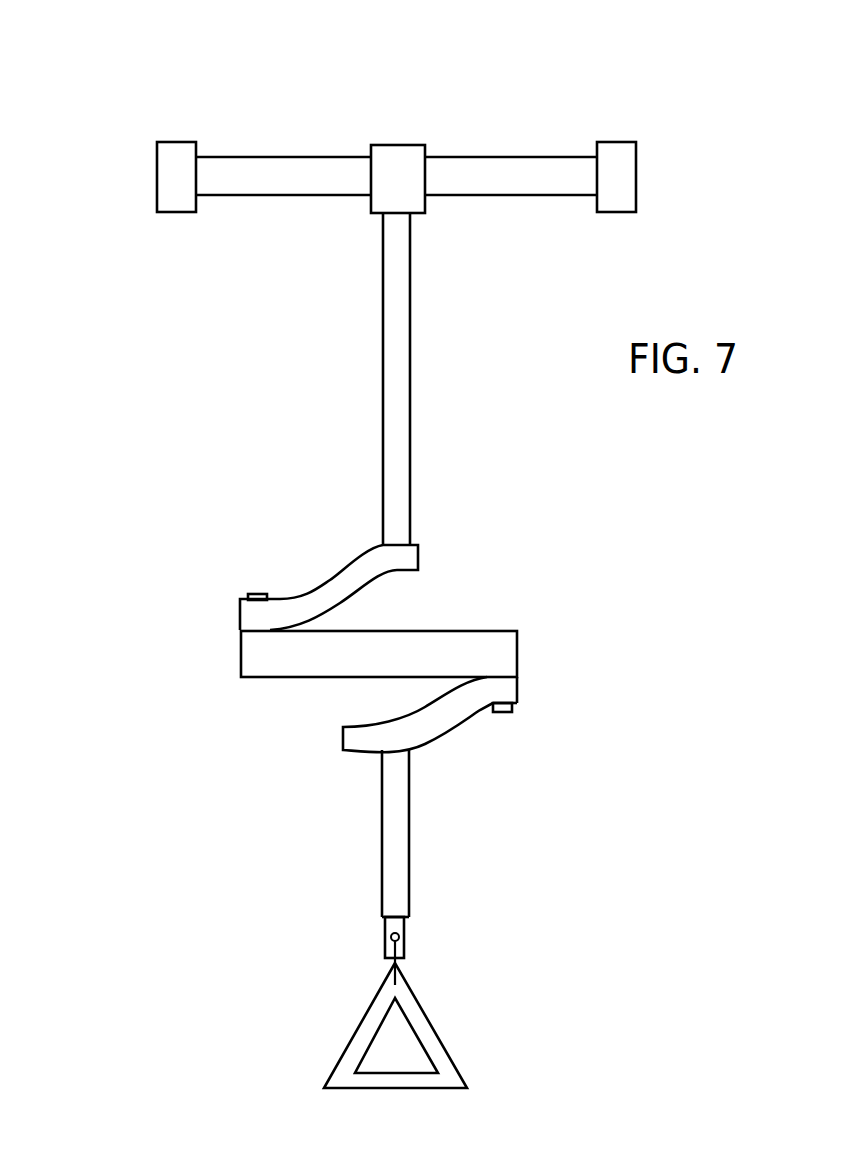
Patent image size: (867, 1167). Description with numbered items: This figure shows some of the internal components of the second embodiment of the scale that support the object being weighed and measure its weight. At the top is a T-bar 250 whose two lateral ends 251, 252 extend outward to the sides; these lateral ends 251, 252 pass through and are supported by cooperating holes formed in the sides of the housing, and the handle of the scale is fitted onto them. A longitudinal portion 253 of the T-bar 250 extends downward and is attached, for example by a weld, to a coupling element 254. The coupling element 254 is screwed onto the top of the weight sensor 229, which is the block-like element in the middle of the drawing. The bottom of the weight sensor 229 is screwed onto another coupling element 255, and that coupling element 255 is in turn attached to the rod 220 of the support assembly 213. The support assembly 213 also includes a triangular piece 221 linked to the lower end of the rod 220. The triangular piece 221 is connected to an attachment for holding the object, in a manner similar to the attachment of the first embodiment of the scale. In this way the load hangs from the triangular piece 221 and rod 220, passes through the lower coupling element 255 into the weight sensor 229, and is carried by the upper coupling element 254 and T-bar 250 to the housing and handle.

The T-bar 250 is at (383, 332).
The lateral end 251 is at (170, 140).
The lateral end 252 is at (627, 140).
The longitudinal portion 253 is at (381, 457).
The coupling element 254 is at (419, 542).
The weight sensor 229 is at (518, 640).
The coupling element 255 is at (447, 735).
The rod 220 is at (382, 820).
The support assembly 213 is at (300, 893).
The triangular piece 221 is at (423, 1005).